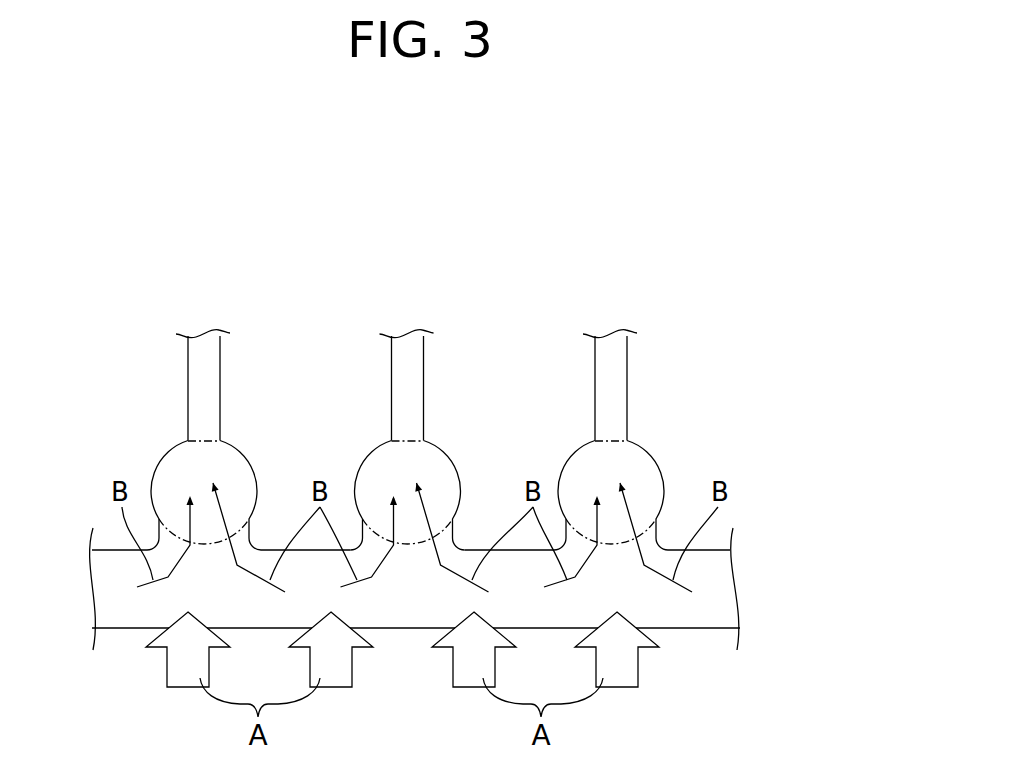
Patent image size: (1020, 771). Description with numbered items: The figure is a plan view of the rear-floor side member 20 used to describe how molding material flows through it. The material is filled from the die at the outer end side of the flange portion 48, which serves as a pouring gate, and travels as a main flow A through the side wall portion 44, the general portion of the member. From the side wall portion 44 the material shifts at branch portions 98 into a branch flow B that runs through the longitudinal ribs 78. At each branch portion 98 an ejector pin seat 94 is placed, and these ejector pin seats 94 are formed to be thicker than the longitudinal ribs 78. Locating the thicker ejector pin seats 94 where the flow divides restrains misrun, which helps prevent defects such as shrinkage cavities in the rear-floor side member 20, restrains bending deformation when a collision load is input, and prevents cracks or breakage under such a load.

The rear-floor side member 20 is at (720, 325).
The side wall portion 44 is at (713, 608).
The flange portion 48 is at (458, 739).
The longitudinal rib 78 is at (208, 370).
The ejector pin seat 94 is at (233, 470).
The branch portion 98 is at (197, 553).